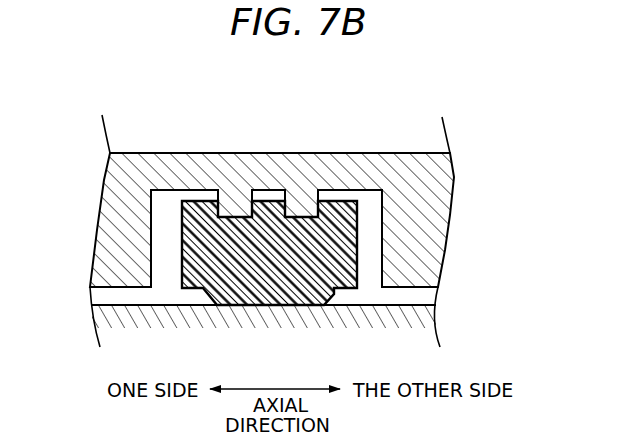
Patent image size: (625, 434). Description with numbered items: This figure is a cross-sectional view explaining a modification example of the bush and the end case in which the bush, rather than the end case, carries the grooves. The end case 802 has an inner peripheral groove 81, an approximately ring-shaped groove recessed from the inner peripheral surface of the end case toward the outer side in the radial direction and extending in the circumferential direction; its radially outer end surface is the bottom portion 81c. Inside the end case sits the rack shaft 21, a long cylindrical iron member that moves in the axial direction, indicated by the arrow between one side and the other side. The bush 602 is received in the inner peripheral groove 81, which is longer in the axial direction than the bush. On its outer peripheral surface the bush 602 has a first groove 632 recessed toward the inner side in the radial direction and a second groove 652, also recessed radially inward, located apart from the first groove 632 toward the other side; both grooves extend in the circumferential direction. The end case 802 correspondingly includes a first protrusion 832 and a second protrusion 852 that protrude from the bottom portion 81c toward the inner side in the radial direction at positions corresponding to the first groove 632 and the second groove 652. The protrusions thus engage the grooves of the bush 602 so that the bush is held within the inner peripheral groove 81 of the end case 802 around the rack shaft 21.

The end case 802 is at (462, 208).
The rack shaft 21 is at (127, 305).
The inner peripheral groove 81 is at (161, 292).
The bottom portion 81c is at (170, 190).
The first groove 632 is at (230, 216).
The second groove 652 is at (292, 215).
The first protrusion 832 is at (240, 201).
The second protrusion 852 is at (308, 204).
The bush 602 is at (346, 302).